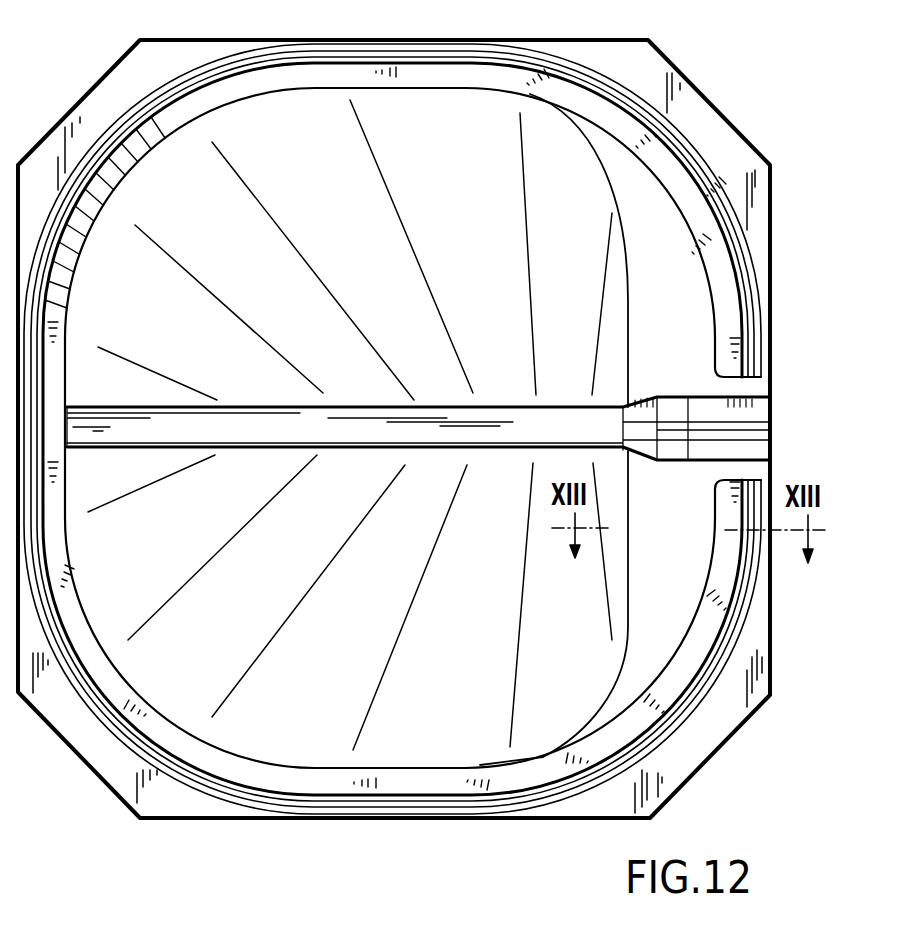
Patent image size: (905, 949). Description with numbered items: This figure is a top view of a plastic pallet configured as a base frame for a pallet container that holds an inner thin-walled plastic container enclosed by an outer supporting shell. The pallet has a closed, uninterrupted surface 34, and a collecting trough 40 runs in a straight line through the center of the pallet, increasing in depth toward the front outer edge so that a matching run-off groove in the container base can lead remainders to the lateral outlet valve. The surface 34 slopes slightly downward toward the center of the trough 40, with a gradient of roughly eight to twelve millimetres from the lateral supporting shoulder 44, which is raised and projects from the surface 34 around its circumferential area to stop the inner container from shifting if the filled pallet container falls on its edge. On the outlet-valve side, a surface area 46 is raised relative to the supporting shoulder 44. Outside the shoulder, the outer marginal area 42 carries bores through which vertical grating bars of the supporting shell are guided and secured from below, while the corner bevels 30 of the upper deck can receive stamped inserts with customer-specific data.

The bevel 30 is at (77, 102).
The pallet surface 34 is at (253, 264).
The collecting trough 40 is at (402, 424).
The outer marginal area 42 is at (757, 599).
The supporting shoulder 44 is at (762, 340).
The surface area 46 is at (643, 335).